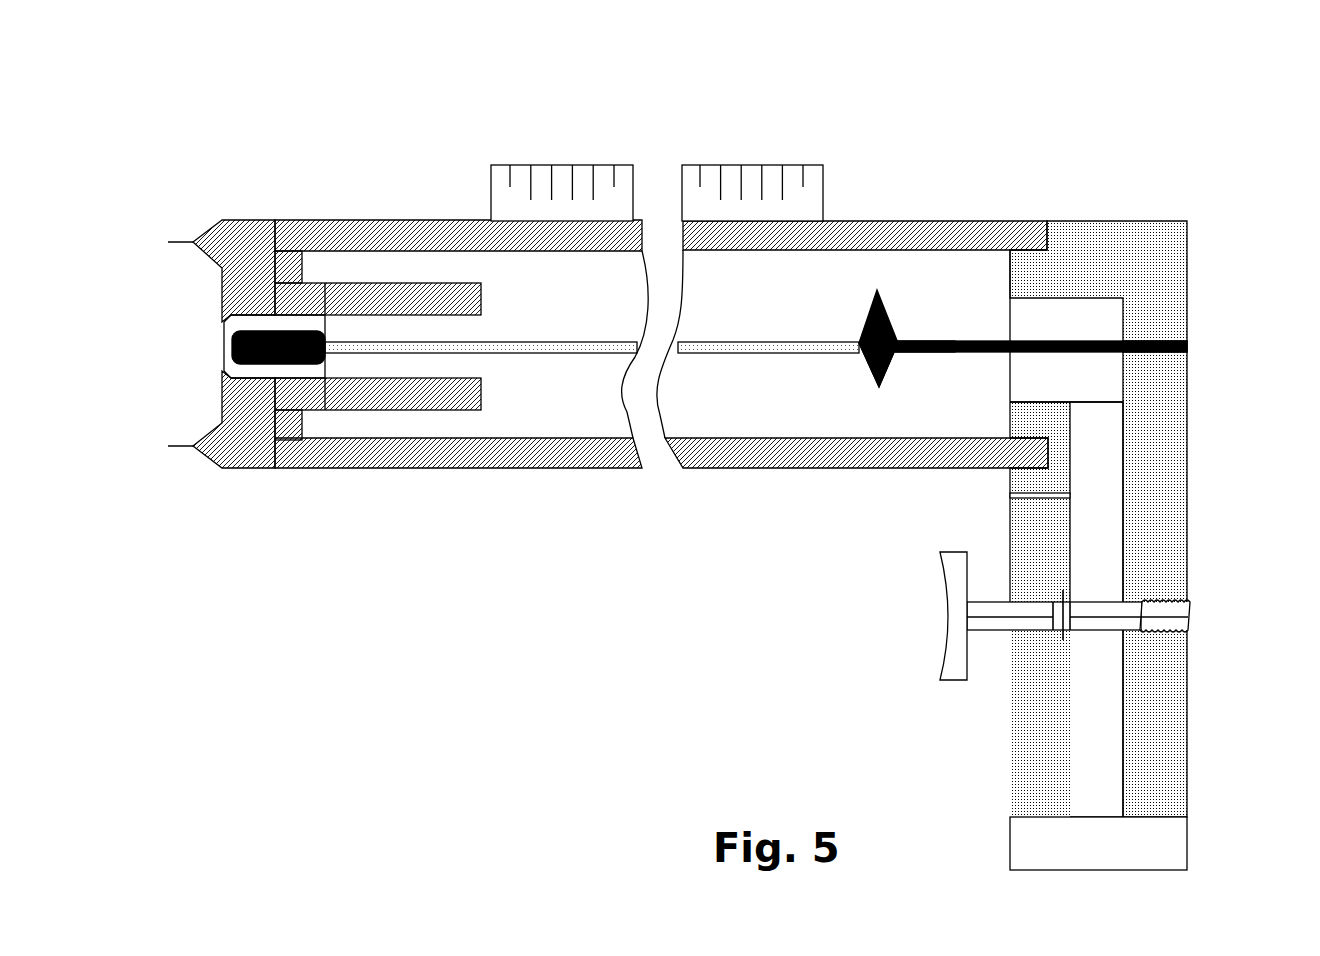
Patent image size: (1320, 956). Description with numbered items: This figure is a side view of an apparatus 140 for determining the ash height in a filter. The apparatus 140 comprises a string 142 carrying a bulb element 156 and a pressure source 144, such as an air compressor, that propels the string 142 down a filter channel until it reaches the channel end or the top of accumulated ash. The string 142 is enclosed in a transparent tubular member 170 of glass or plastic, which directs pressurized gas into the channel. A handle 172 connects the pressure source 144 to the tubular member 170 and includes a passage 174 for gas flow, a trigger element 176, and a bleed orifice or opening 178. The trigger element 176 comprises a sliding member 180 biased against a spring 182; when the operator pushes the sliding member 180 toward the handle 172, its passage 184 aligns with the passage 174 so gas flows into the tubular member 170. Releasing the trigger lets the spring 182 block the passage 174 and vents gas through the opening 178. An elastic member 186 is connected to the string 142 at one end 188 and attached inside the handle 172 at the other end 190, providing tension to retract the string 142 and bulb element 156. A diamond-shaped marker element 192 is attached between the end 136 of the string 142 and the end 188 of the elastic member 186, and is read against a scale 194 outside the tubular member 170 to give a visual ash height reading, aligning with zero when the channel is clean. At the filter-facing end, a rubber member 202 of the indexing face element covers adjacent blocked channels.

The apparatus 140 is at (267, 115).
The rubber member 202 is at (327, 283).
The scale 194 is at (560, 165).
The end of the string 136 is at (858, 343).
The end of the elastic member 188 is at (898, 340).
The elastic member 186 is at (1042, 342).
The other end of the elastic member 190 is at (1188, 343).
The passage 174 is at (1077, 443).
The handle 172 is at (1157, 478).
The passage 184 is at (1065, 612).
The spring 182 is at (1167, 635).
The bulb element 156 is at (248, 363).
The string 142 is at (548, 350).
The transparent tubular member 170 is at (592, 453).
The marker element 192 is at (867, 360).
The bleed orifice or opening 178 is at (1010, 497).
The trigger element 176 is at (947, 613).
The sliding member 180 is at (1007, 623).
The pressure source 144 is at (1115, 858).